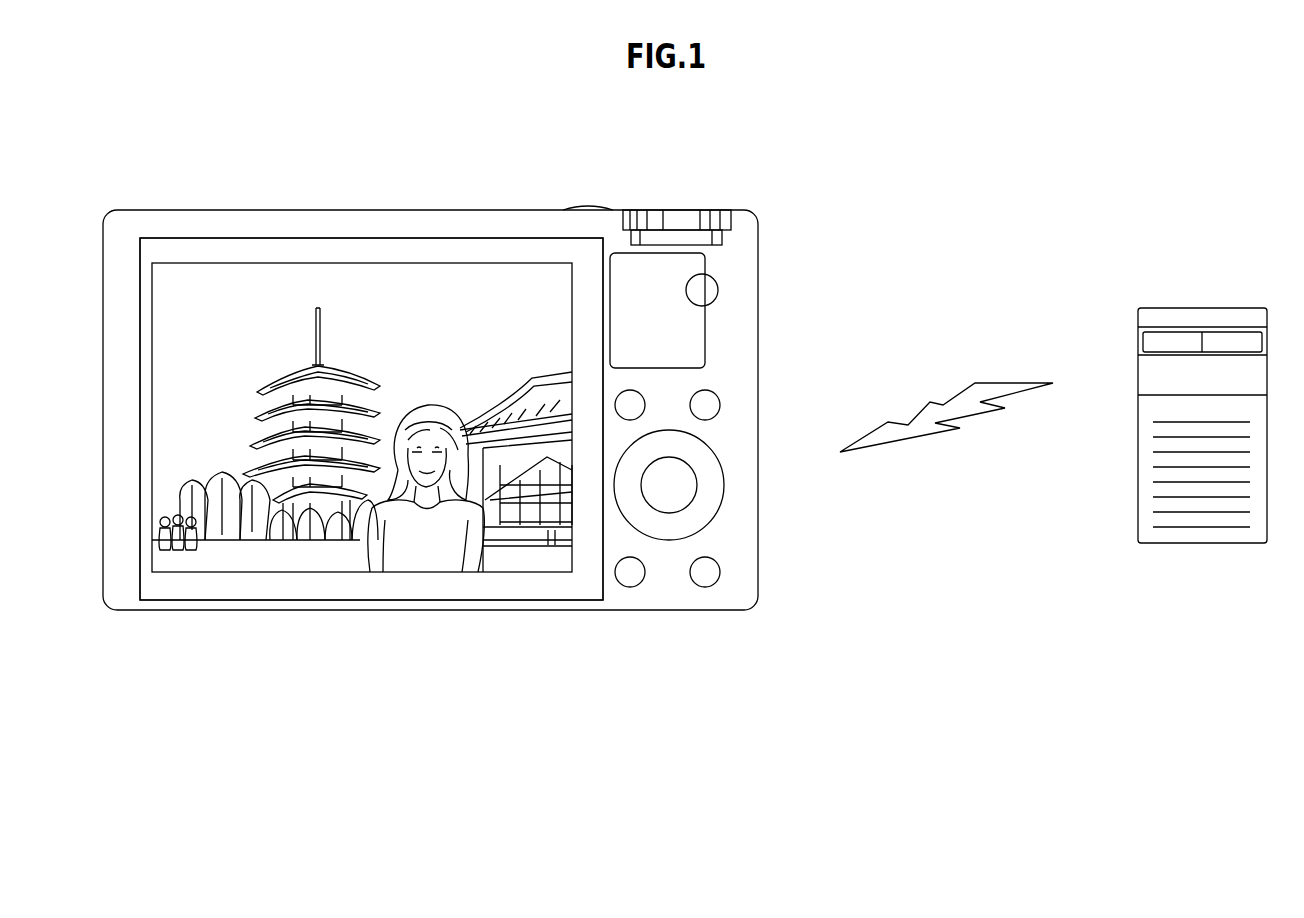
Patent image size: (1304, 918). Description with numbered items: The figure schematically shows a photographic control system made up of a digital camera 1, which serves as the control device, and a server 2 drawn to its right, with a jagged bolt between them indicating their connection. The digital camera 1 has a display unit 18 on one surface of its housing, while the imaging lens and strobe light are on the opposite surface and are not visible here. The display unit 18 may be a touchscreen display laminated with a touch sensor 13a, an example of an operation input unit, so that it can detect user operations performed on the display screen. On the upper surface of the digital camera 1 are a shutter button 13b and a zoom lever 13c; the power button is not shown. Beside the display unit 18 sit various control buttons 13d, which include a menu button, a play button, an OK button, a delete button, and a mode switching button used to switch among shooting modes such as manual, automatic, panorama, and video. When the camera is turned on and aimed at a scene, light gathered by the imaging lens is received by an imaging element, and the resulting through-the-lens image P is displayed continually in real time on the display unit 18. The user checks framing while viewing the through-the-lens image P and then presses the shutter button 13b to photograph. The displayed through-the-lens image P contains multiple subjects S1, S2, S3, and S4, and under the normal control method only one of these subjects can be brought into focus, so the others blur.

The digital camera 1 is at (155, 210).
The server 2 is at (1205, 308).
The display unit 18 is at (272, 263).
The touch sensor 13a is at (371, 419).
The shutter button 13b is at (588, 208).
The zoom lever 13c is at (678, 212).
The control buttons 13d is at (731, 540).
The through-the-lens image P is at (358, 263).
The subject S1 is at (424, 405).
The subject S2 is at (508, 395).
The subject S3 is at (160, 528).
The subject S4 is at (270, 387).